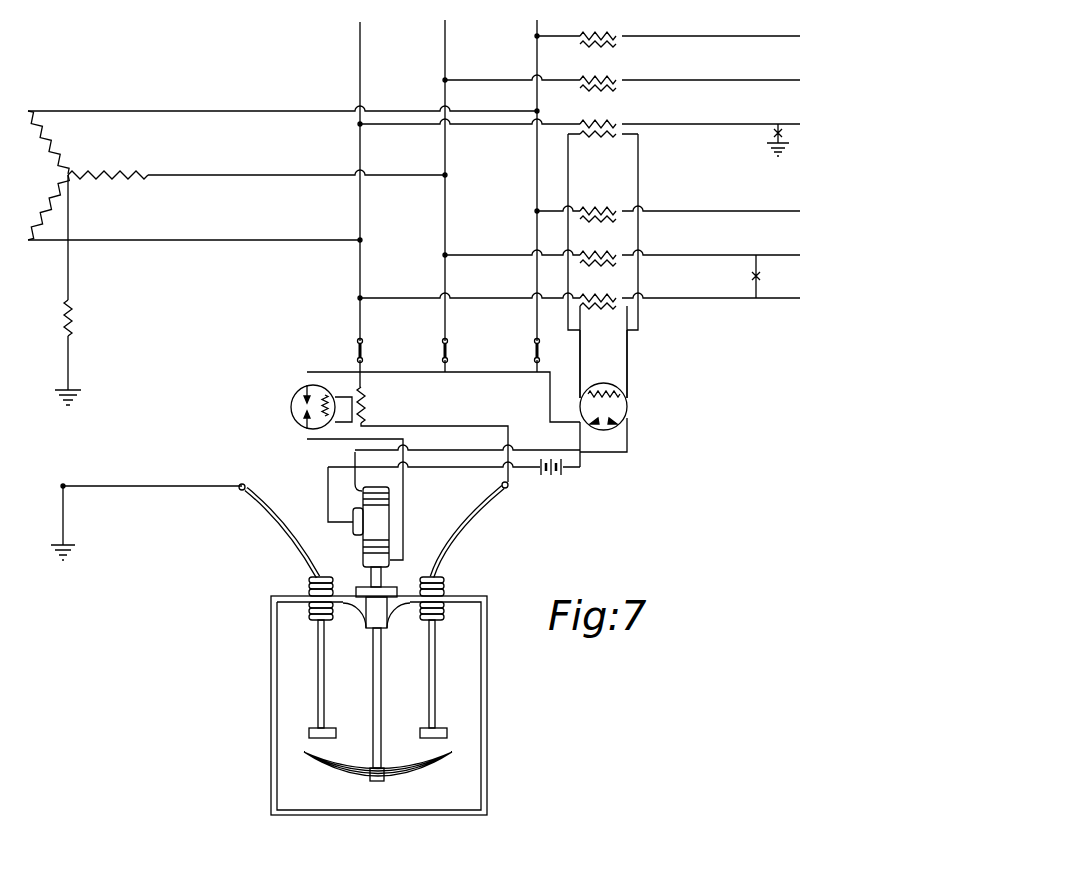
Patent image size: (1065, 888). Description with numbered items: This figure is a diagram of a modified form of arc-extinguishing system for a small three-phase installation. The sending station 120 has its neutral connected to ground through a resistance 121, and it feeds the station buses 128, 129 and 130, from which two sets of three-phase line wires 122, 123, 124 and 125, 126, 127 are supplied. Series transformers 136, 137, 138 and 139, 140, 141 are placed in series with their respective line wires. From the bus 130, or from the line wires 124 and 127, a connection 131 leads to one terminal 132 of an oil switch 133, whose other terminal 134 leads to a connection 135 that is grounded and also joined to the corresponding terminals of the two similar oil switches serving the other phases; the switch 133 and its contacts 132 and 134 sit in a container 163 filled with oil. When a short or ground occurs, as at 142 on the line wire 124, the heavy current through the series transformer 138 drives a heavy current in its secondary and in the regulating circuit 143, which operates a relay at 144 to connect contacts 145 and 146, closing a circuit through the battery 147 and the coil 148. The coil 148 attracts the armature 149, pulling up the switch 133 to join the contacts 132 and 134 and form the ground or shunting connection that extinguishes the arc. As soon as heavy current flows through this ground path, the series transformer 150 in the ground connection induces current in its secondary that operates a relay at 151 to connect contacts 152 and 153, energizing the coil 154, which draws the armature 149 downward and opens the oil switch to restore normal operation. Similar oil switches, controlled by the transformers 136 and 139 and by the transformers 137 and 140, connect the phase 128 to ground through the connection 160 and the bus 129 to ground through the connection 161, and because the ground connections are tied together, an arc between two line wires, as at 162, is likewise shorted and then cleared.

The sending station 120 is at (58, 148).
The resistance 121 is at (73, 323).
The line wire 122 is at (679, 35).
The line wire 123 is at (733, 79).
The line wire 124 is at (719, 123).
The line wire 125 is at (713, 211).
The line wire 126 is at (710, 254).
The line wire 127 is at (700, 297).
The station bus 128 is at (535, 163).
The station bus 129 is at (447, 231).
The station bus 130 is at (363, 271).
The connection 131 is at (360, 315).
The terminal 132 is at (450, 733).
The oil switch 133 is at (410, 762).
The terminal 134 is at (310, 734).
The connection 135 is at (147, 484).
The series transformer 136 is at (602, 33).
The series transformer 137 is at (606, 79).
The series transformer 138 is at (601, 123).
The series transformer 139 is at (596, 210).
The series transformer 140 is at (595, 254).
The series transformer 141 is at (596, 297).
The short or ground (arc) 142 is at (770, 136).
The regulating circuit 143 is at (625, 368).
The relay 144 is at (612, 411).
The contact 145 is at (612, 425).
The contact 146 is at (594, 426).
The battery 147 is at (552, 478).
The coil 148 is at (392, 498).
The armature 149 is at (378, 520).
The series transformer 150 is at (366, 409).
The relay 151 is at (297, 406).
The contact 152 is at (307, 417).
The contact 153 is at (307, 399).
The coil 154 is at (392, 547).
The connection 160 is at (537, 316).
The connection 161 is at (445, 318).
The arc between line wires 162 is at (763, 276).
The container 163 is at (488, 757).